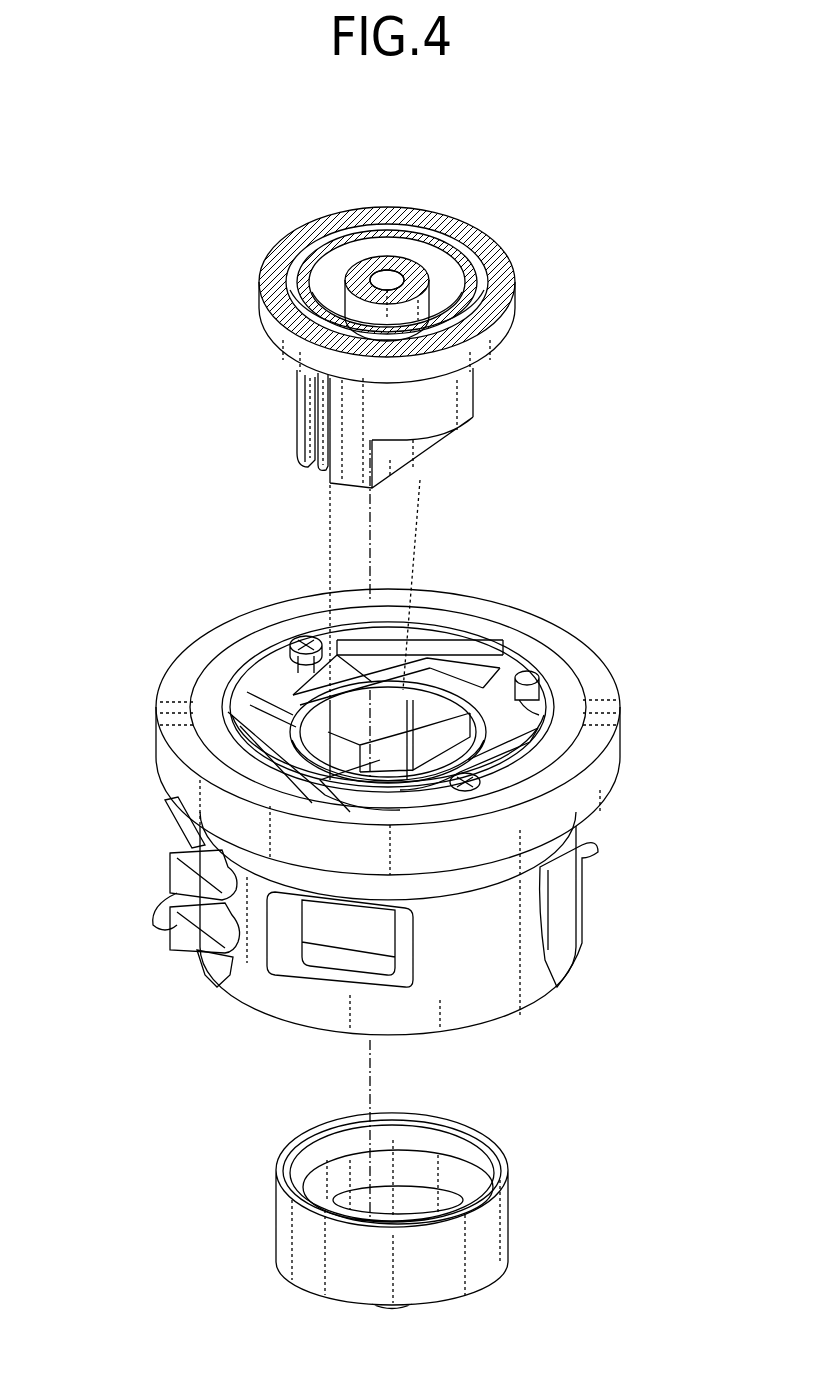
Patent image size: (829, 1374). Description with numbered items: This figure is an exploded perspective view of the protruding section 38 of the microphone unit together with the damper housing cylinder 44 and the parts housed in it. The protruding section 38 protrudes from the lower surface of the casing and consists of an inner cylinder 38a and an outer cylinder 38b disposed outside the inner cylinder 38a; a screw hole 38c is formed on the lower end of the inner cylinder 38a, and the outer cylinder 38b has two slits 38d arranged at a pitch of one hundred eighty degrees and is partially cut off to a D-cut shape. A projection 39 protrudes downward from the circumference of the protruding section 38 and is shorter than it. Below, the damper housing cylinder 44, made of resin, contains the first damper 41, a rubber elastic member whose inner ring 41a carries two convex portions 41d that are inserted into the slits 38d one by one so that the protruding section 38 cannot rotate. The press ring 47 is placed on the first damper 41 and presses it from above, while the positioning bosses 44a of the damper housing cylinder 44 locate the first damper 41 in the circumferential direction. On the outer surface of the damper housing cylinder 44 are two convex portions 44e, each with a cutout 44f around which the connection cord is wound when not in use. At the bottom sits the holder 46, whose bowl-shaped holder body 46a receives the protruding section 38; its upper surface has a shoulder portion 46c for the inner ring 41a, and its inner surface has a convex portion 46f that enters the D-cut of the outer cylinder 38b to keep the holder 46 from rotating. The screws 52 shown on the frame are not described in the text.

The protruding section 38 is at (435, 336).
The inner cylinder 38a is at (412, 272).
The outer cylinder 38b is at (300, 256).
The screw hole 38c is at (383, 276).
The slits 38d is at (316, 404).
The projection 39 is at (272, 327).
The first damper 41 is at (383, 652).
The inner ring 41a is at (382, 686).
The convex portions 41d is at (416, 748).
The damper housing cylinder 44 is at (330, 767).
The positioning bosses 44a is at (528, 674).
The convex portions 44e is at (222, 990).
The cutout 44f is at (190, 912).
The holder 46 is at (353, 1195).
The holder body 46a is at (292, 1225).
The shoulder portion 46c is at (337, 1143).
The convex portion 46f is at (455, 1195).
The press ring 47 is at (240, 662).
The screw 52 is at (303, 638).